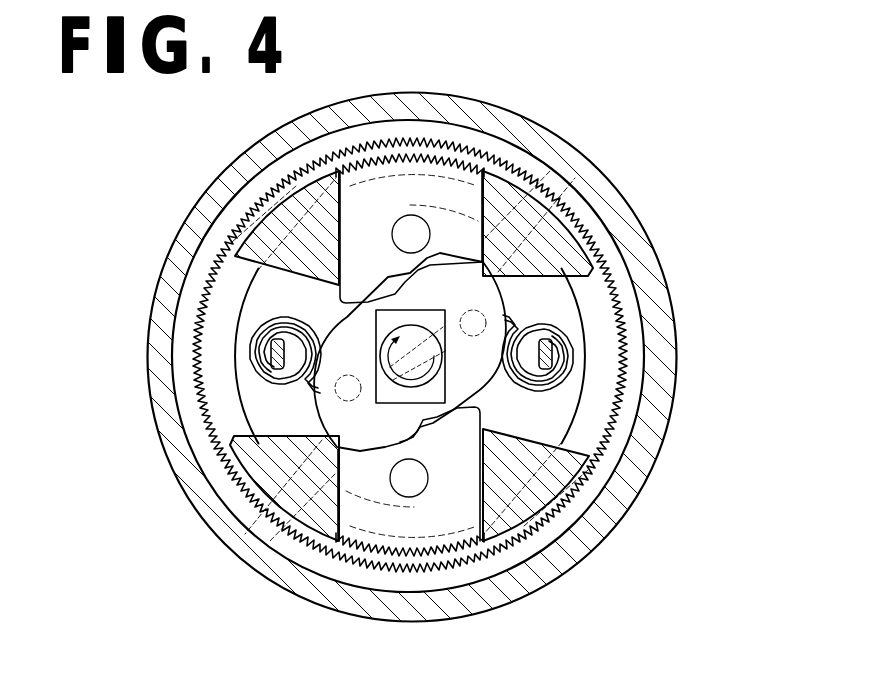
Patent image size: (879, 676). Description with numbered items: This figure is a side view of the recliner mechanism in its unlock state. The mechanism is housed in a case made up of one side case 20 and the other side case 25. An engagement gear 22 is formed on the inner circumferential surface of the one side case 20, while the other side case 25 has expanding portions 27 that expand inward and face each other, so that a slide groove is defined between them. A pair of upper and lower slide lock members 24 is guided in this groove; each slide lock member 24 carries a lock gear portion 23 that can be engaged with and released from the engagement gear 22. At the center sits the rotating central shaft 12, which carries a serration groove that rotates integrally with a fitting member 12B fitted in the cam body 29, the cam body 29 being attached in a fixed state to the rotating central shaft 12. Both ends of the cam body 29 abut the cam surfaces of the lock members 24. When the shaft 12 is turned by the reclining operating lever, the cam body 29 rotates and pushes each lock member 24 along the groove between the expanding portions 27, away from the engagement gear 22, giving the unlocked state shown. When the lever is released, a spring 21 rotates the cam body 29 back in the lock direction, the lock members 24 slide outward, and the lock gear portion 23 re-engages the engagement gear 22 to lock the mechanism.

The rotating central shaft 12 is at (432, 338).
The fitting member 12B is at (390, 394).
The one side case 20 is at (453, 338).
The other side case 25 is at (453, 338).
The spring 21 is at (258, 334).
The engagement gear 22 is at (607, 345).
The lock gear portion 23 is at (408, 150).
The slide lock member 24 is at (472, 167).
The expanding portions 27 is at (263, 197).
The cam body 29 is at (485, 396).